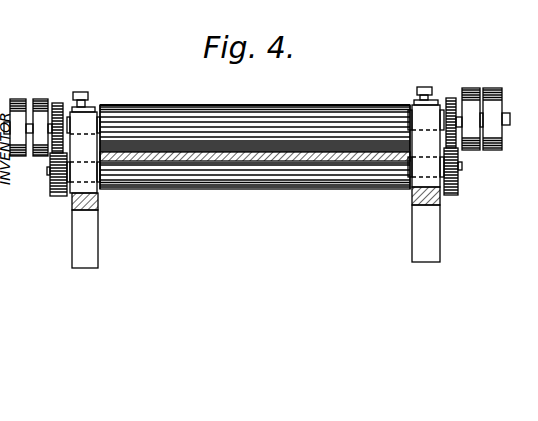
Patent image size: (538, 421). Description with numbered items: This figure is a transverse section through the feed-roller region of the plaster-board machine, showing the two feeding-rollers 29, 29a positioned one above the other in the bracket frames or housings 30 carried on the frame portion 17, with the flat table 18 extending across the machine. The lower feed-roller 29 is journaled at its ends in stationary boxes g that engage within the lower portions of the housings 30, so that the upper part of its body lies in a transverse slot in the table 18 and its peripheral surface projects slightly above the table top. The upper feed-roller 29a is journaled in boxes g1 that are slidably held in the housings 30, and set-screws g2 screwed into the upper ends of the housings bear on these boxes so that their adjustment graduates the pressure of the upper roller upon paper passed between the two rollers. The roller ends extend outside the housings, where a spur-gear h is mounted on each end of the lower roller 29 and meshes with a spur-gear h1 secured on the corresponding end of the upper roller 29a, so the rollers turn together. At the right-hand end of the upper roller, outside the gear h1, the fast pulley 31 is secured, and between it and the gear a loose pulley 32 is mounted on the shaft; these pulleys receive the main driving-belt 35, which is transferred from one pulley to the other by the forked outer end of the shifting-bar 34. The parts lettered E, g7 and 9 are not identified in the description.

The lower feed-roller 29 is at (345, 180).
The upper feed-roller 29a is at (368, 100).
The table 18 is at (290, 161).
The roller E is at (207, 162).
The housing 30 is at (80, 107).
The set-screw g2 is at (88, 93).
The slidable box g1 is at (100, 113).
The roller journal end g7 is at (411, 100).
The stationary box g is at (101, 187).
The frame standard 9 is at (85, 239).
The frame portion 17 is at (425, 222).
The spur-gear h1 is at (57, 102).
The spur-gear h is at (51, 188).
The main driving-belt 35 is at (17, 99).
The shifting-bar 34 is at (43, 156).
The loose pulley 32 is at (479, 93).
The pulley 31 is at (504, 99).